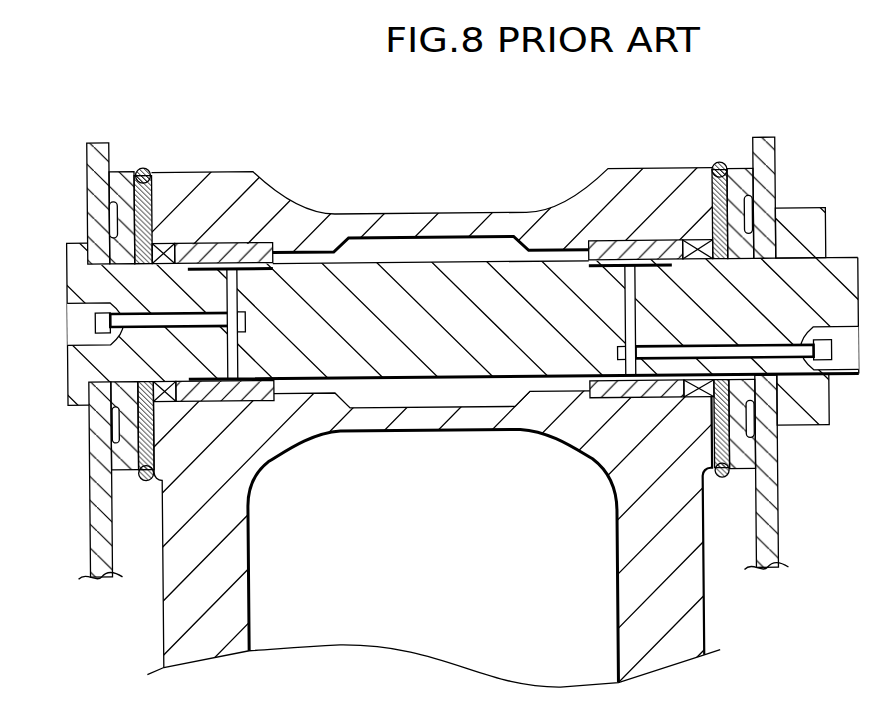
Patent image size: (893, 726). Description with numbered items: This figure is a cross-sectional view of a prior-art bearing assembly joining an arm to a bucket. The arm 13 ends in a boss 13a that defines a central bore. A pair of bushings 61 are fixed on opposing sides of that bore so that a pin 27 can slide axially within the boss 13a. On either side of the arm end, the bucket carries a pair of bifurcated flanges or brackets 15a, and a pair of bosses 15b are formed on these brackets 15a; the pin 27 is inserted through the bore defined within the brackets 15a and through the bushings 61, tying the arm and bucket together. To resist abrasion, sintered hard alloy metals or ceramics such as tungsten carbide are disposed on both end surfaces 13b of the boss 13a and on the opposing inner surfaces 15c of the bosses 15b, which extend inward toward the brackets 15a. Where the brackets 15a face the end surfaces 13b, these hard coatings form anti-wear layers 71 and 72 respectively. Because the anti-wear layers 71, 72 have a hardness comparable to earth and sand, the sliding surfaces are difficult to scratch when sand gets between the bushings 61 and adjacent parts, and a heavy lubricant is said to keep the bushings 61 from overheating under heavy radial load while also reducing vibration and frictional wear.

The arm 13 is at (716, 641).
The boss 13a is at (447, 223).
The end surface of the boss 13b is at (154, 210).
The bracket 15a is at (90, 163).
The boss 15b is at (137, 480).
The inner surface of the boss 15c is at (118, 417).
The pin 27 is at (447, 357).
The bushing 61 is at (243, 400).
The anti-wear layer 71 is at (153, 458).
The anti-wear layer 72 is at (748, 186).